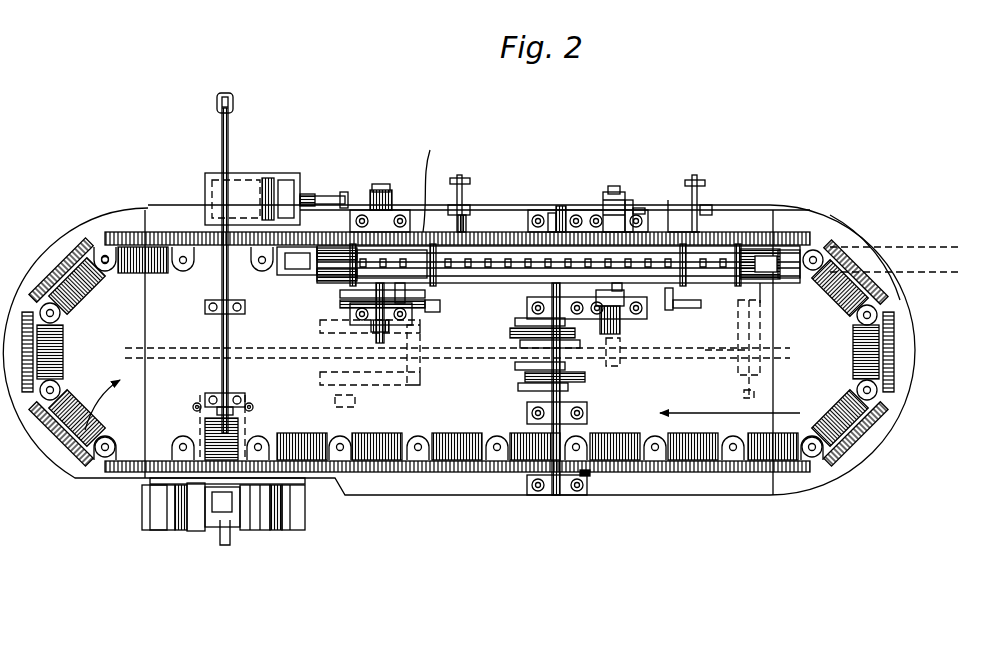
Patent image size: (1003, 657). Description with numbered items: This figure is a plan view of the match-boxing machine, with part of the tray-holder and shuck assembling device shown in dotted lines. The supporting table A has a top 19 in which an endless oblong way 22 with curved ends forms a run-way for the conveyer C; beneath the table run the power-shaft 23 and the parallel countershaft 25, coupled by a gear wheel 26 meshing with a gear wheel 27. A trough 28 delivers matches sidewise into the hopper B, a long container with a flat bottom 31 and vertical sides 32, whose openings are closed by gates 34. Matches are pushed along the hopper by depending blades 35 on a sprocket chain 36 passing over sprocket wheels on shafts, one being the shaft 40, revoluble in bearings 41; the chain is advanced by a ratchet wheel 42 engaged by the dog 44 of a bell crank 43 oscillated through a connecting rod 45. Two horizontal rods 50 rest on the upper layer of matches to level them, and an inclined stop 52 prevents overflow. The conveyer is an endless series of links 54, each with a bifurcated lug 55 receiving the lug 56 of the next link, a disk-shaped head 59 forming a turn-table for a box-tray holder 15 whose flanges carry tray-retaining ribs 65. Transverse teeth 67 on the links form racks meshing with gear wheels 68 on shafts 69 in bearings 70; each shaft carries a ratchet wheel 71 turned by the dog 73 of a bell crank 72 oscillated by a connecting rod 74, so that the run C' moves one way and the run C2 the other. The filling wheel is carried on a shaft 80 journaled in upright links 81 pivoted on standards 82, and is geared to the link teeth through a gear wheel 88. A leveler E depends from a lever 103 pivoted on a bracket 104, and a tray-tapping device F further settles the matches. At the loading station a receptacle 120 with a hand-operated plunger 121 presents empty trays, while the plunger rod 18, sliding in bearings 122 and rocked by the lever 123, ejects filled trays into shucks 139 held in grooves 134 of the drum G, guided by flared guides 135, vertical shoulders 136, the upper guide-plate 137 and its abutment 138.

The box-tray holder 15 is at (780, 430).
The plunger rod 18 is at (220, 368).
The table top 19 is at (70, 237).
The endless slot or way 22 is at (107, 443).
The power-shaft 23 is at (705, 360).
The countershaft 25 is at (773, 347).
The gear wheel 26 is at (754, 337).
The gear wheel 27 is at (747, 396).
The trough 28 is at (920, 260).
The flat bottom 31 is at (833, 268).
The vertical sides 32 is at (334, 273).
The gate or trap 34 is at (370, 289).
The depending blade 35 is at (760, 239).
The sprocket chain 36 is at (719, 217).
The shaft 40 is at (689, 300).
The bearing 41 is at (395, 232).
The ratchet wheel 42 is at (472, 292).
The bell crank 43 is at (460, 306).
The dog 44 is at (481, 303).
The connecting rod 45 is at (445, 312).
The horizontal rod 50 is at (317, 260).
The stop 52 is at (315, 278).
The conveyer link 54 is at (205, 263).
The bifurcated lug 55 is at (58, 318).
The lug 56 is at (45, 301).
The disk-shaped head 59 is at (433, 180).
The tray-retaining rib 65 is at (65, 365).
The transverse teeth 67 is at (897, 388).
The gear wheel 68 is at (558, 220).
The shaft 69 is at (548, 215).
The bearing 70 is at (574, 220).
The ratchet wheel 71 is at (592, 405).
The bell crank 72 is at (515, 335).
The dog 73 is at (618, 395).
The connecting rod 74 is at (520, 365).
The shaft 80 is at (635, 215).
The upright link 81 is at (626, 206).
The standard 82 is at (610, 198).
The gear wheel 88 is at (605, 200).
The lever 103 is at (463, 195).
The bracket 104 is at (473, 210).
The receptacle 120 is at (245, 187).
The hand-operated plunger 121 is at (323, 198).
The bearing 122 is at (210, 308).
The lever 123 is at (228, 96).
The peripheral transverse groove 134 is at (165, 530).
The flared guide 135 is at (308, 478).
The vertical shoulder 136 is at (165, 492).
The upper guide-plate 137 is at (265, 530).
The abutment 138 is at (224, 545).
The shuck 139 is at (215, 530).
The supporting table A is at (832, 215).
The hopper B is at (771, 290).
The conveyer C is at (914, 348).
The conveyer run C' is at (152, 183).
The conveyer run C2 is at (475, 485).
The leveler E is at (460, 175).
The tray-tapping device F is at (693, 192).
The shuck carrying drum G is at (140, 535).